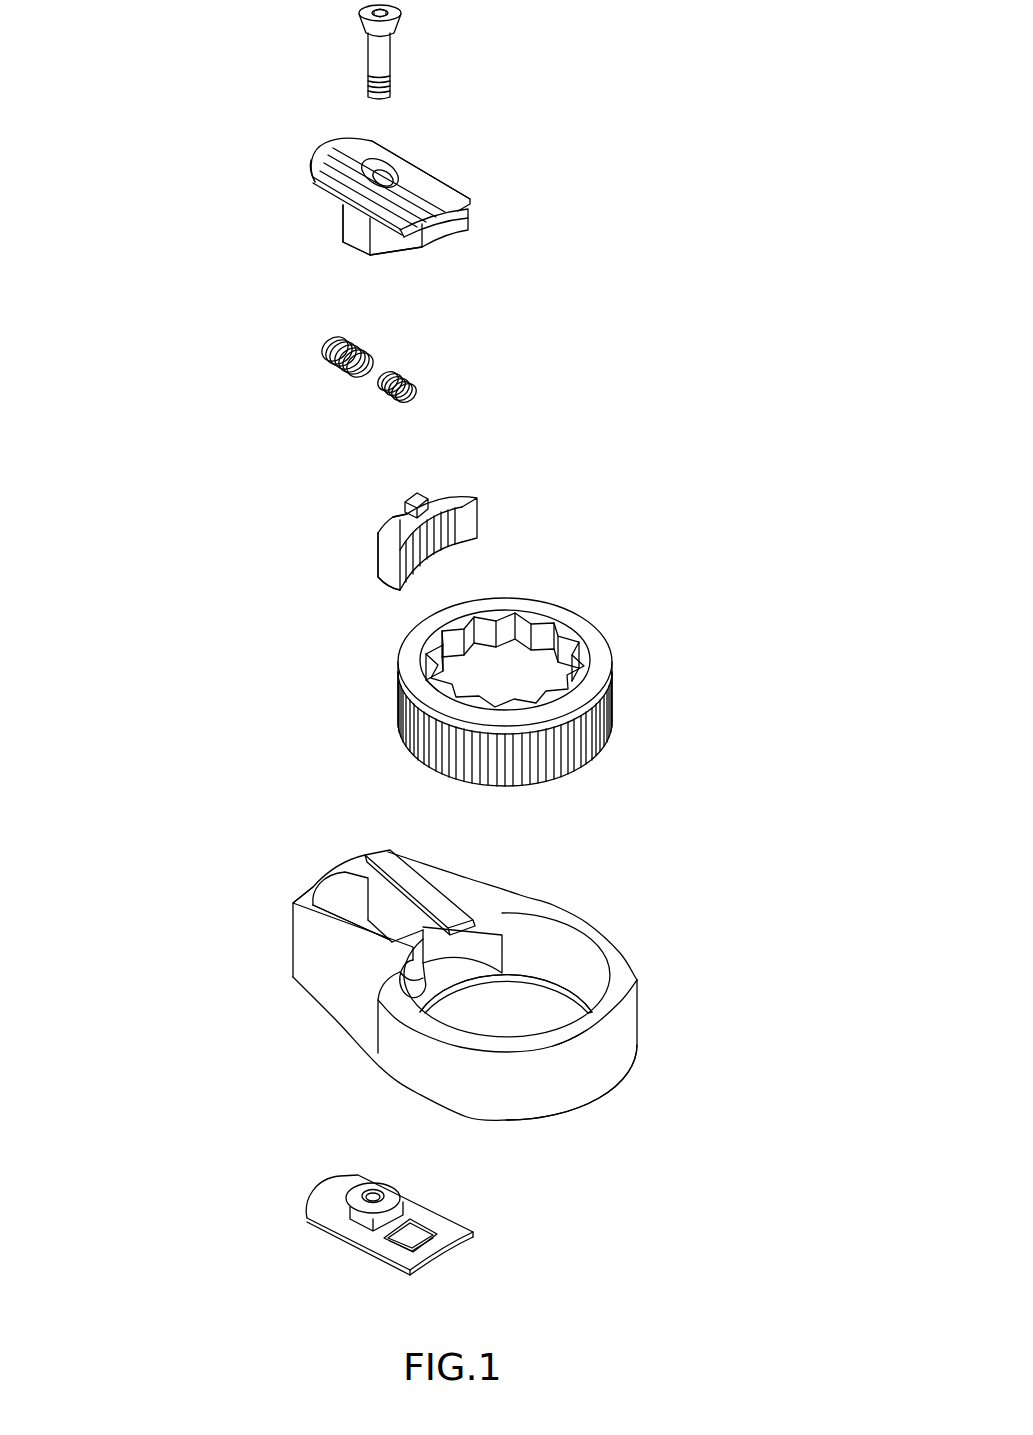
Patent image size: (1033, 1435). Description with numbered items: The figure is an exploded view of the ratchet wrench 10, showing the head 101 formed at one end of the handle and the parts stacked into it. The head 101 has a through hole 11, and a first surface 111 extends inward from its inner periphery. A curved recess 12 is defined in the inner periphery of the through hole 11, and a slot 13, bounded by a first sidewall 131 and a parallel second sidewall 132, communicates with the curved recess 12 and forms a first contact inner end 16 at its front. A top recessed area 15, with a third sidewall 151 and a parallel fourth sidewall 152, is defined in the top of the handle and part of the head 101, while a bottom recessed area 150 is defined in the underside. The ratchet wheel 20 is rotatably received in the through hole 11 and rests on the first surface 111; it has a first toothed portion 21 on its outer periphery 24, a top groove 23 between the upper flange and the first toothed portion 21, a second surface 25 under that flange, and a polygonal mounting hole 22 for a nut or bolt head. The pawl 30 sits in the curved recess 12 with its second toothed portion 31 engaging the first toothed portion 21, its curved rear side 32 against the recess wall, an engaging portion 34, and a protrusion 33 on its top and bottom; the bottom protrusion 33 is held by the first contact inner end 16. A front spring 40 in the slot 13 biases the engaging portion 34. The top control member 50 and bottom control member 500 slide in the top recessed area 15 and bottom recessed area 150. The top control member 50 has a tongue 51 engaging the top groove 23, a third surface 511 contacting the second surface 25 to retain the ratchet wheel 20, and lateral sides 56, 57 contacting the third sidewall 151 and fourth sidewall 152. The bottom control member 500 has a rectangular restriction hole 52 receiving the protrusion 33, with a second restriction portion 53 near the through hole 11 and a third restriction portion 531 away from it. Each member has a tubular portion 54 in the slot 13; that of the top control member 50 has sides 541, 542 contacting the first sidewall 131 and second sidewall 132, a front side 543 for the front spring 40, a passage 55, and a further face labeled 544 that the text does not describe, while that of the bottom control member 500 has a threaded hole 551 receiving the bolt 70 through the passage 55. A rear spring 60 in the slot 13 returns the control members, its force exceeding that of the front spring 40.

The ratchet wrench 10 is at (468, 988).
The head 101 is at (552, 1088).
The through hole 11 is at (583, 947).
The first surface 111 is at (607, 993).
The curved recess 12 is at (478, 947).
The slot 13 is at (335, 885).
The first sidewall 131 is at (423, 918).
The second sidewall 132 is at (390, 933).
The top recessed area 15 is at (407, 890).
The bottom recessed area 150 is at (448, 997).
The third sidewall 151 is at (390, 867).
The fourth sidewall 152 is at (317, 907).
The first contact inner end 16 is at (420, 978).
The ratchet wheel 20 is at (492, 692).
The first toothed portion 21 is at (500, 724).
The polygonal mounting hole 22 is at (433, 657).
The top groove 23 is at (407, 727).
The outer periphery 24 is at (400, 662).
The second surface 25 is at (400, 685).
The pawl 30 is at (424, 523).
The second toothed portion 31 is at (457, 532).
The curved rear side 32 is at (378, 555).
The protrusion 33 is at (408, 497).
The engaging portion 34 is at (393, 513).
The front spring 40 is at (407, 378).
The top control member 50 is at (398, 671).
The bottom control member 500 is at (386, 1225).
The tongue 51 is at (479, 239).
The third surface 511 is at (460, 217).
The rectangular restriction hole 52 is at (411, 1246).
The second restriction portion 53 is at (418, 1243).
The third restriction portion 531 is at (388, 1242).
The tubular portion 54 is at (355, 718).
The side of tubular portion 541 is at (430, 200).
The side of tubular portion 542 is at (363, 240).
The front side of tubular portion 543 is at (383, 242).
The left face of nut block 544 is at (343, 215).
The passage 55 is at (372, 175).
The threaded hole 551 is at (380, 1198).
The lateral side 56 is at (392, 148).
The lateral side 57 is at (317, 182).
The rear spring 60 is at (327, 367).
The bolt 70 is at (378, 62).